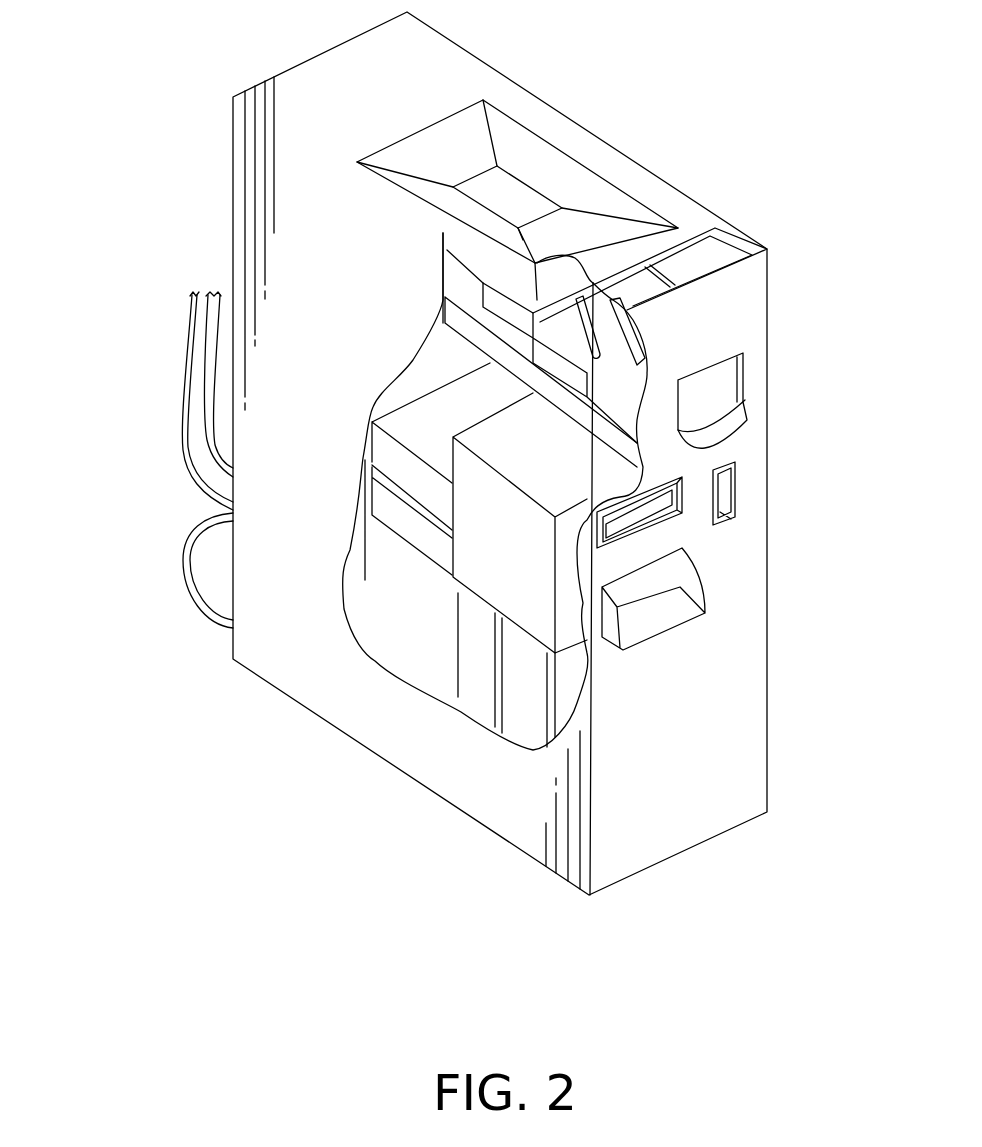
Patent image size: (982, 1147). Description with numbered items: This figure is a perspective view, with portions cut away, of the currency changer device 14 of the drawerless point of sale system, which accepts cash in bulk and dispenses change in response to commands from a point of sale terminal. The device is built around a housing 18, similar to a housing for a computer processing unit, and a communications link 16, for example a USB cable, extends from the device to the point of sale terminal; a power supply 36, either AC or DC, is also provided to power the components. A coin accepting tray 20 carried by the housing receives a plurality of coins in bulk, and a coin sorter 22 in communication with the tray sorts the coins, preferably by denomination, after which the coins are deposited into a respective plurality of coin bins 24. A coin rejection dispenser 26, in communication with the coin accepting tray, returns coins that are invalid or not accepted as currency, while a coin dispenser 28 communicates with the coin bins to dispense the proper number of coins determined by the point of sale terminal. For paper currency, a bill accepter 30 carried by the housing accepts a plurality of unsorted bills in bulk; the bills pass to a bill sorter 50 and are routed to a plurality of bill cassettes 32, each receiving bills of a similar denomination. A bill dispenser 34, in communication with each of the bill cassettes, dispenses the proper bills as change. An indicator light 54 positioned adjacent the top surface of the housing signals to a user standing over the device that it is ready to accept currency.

The currency changer device 14 is at (702, 125).
The communications link 16 is at (180, 467).
The housing 18 is at (768, 322).
The coin accepting tray 20 is at (543, 156).
The coin sorter 22 is at (643, 324).
The coin bins 24 is at (452, 346).
The coin rejection dispenser 26 is at (738, 480).
The coin dispenser 28 is at (746, 368).
The bill accepter 30 is at (675, 519).
The bill cassettes 32 is at (433, 580).
The bill dispenser 34 is at (683, 608).
The power supply 36 is at (187, 585).
The bill sorter 50 is at (517, 573).
The indicator light 54 is at (722, 229).